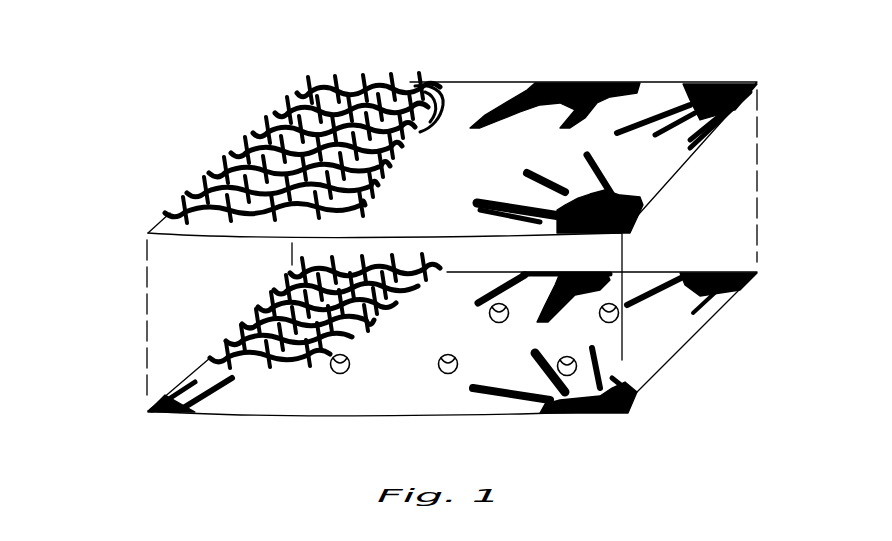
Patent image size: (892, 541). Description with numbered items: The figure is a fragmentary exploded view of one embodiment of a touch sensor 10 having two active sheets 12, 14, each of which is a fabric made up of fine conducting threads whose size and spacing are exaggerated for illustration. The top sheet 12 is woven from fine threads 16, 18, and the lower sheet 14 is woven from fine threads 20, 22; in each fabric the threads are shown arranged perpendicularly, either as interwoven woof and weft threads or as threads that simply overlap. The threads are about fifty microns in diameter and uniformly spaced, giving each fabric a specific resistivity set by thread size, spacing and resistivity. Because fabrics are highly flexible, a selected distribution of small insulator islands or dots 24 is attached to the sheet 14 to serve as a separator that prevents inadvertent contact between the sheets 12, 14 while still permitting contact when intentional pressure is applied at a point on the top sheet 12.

The touch sensor 10 is at (124, 246).
The top sheet 12 is at (730, 83).
The sheet 14 is at (679, 351).
The fine threads 16 is at (278, 103).
The fine threads 18 is at (213, 167).
The fine threads 20 is at (258, 312).
The fine threads 22 is at (242, 318).
The insulator dots 24 is at (440, 374).